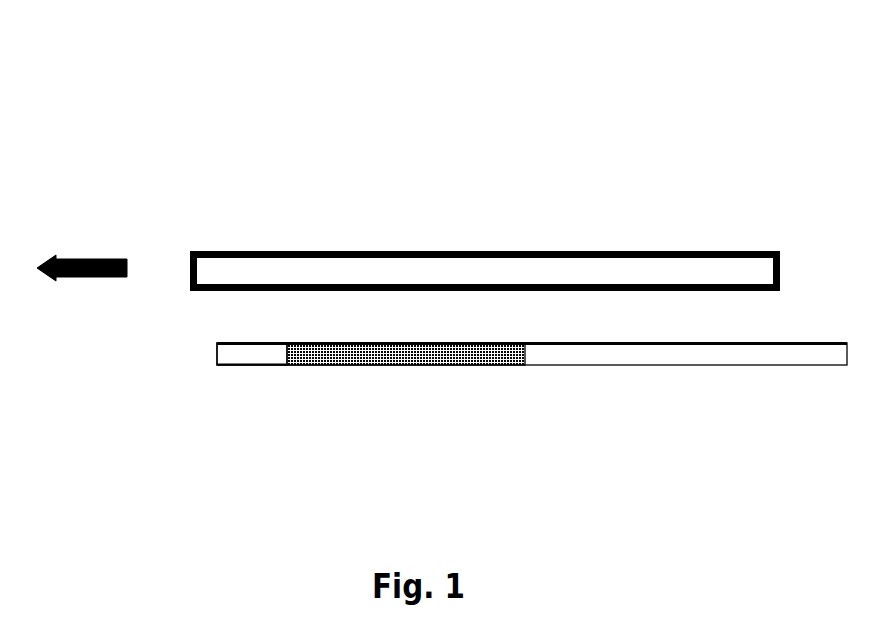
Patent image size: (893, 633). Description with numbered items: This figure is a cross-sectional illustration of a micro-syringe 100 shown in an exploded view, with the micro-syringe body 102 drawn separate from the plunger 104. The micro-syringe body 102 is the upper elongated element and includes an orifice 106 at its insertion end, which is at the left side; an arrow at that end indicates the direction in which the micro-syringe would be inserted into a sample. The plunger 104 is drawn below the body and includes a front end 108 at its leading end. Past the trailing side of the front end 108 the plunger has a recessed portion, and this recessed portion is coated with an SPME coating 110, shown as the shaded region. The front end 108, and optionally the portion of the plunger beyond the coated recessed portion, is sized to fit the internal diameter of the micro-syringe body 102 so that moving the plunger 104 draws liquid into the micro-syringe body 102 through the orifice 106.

The micro-syringe 100 is at (487, 152).
The micro-syringe body 102 is at (288, 249).
The plunger 104 is at (562, 392).
The orifice 106 is at (190, 273).
The front end 108 is at (259, 366).
The SPME coating 110 is at (391, 357).